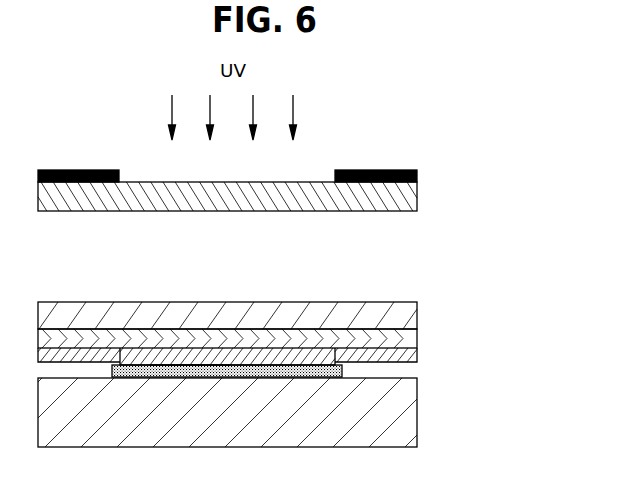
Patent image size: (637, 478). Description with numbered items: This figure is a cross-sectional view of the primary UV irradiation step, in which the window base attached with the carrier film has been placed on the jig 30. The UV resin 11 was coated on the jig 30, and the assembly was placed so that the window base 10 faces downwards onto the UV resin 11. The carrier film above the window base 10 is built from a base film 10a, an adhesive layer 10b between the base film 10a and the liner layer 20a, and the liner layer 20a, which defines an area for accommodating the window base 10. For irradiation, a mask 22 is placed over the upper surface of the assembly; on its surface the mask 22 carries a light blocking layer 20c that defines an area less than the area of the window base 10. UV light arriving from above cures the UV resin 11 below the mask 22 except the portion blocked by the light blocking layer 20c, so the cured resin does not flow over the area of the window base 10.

The light blocking layer 20c is at (417, 178).
The mask 22 is at (405, 195).
The base film 10a is at (402, 315).
The adhesive layer 10b is at (402, 338).
The window base 10 is at (267, 355).
The UV resin 11 is at (187, 370).
The liner layer 20a is at (412, 360).
The jig 30 is at (405, 415).